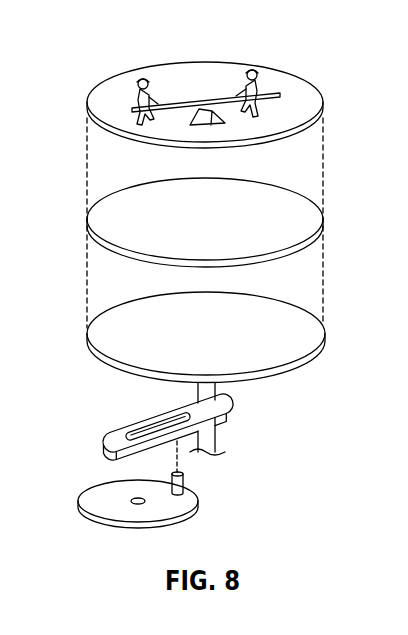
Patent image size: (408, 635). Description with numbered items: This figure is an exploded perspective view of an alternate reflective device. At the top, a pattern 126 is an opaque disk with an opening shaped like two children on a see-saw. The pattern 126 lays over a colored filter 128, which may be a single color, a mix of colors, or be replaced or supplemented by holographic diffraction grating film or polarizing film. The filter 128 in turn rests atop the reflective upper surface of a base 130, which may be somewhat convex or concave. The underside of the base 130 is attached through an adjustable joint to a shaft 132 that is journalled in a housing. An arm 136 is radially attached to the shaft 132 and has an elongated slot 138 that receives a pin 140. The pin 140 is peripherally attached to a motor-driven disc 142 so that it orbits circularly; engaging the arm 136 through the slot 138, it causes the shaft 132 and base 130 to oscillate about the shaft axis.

The pattern 126 is at (108, 108).
The colored filter 128 is at (103, 223).
The base 130 is at (103, 349).
The shaft 132 is at (217, 443).
The arm 136 is at (111, 443).
The elongated slot 138 is at (152, 425).
The pin 140 is at (185, 486).
The motor-driven disc 142 is at (92, 506).